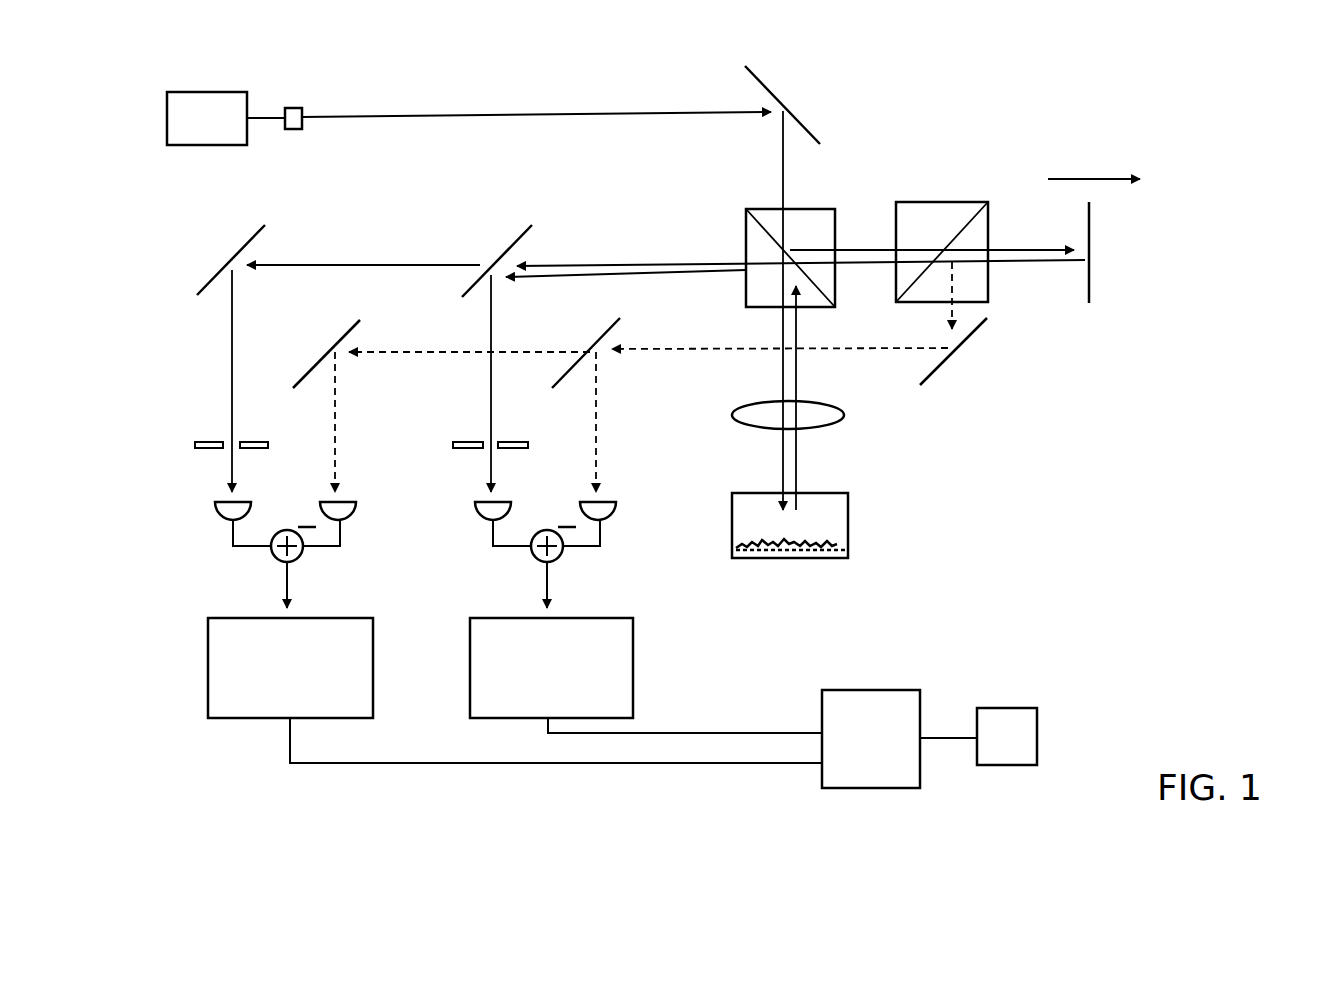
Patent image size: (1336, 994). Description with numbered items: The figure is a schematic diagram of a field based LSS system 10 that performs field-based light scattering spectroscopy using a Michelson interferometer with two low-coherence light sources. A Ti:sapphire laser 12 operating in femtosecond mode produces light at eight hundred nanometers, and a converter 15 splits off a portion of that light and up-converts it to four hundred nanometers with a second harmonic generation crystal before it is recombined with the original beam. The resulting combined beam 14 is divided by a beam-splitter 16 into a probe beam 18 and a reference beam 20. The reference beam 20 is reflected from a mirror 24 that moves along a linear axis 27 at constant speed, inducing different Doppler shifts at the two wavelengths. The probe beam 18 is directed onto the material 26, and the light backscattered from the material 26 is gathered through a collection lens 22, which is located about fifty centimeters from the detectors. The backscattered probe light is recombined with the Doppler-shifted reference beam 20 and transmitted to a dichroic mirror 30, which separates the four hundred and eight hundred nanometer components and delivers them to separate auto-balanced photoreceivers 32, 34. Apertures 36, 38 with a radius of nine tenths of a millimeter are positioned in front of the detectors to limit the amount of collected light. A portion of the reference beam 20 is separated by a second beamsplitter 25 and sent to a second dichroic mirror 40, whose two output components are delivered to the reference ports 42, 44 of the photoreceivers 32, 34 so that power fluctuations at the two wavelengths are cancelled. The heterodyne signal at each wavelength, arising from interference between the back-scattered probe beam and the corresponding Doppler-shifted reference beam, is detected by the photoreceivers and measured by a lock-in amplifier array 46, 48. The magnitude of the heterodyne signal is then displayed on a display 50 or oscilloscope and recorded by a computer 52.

The field based LSS system 10 is at (563, 820).
The Ti:sapphire laser 12 is at (207, 91).
The combined beam 14 is at (545, 113).
The converter 15 is at (293, 107).
The beam-splitter 16 is at (802, 208).
The probe beam 18 is at (781, 360).
The reference beam 20 is at (865, 249).
The collection lens 22 is at (838, 425).
The mirror 24 is at (1093, 285).
The second beamsplitter 25 is at (952, 201).
The material 26 is at (850, 527).
The linear axis 27 is at (1090, 178).
The dichroic mirror 30 is at (505, 250).
The auto-balanced photoreceiver 32 is at (340, 548).
The auto-balanced photoreceiver 34 is at (600, 548).
The aperture 36 is at (230, 500).
The aperture 38 is at (492, 500).
The second dichroic mirror 40 is at (596, 345).
The reference port 42 is at (614, 502).
The reference port 44 is at (352, 502).
The lock-in amplifier array 46 is at (290, 668).
The lock-in amplifier array 48 is at (551, 668).
The display 50 is at (1040, 737).
The computer 52 is at (871, 739).